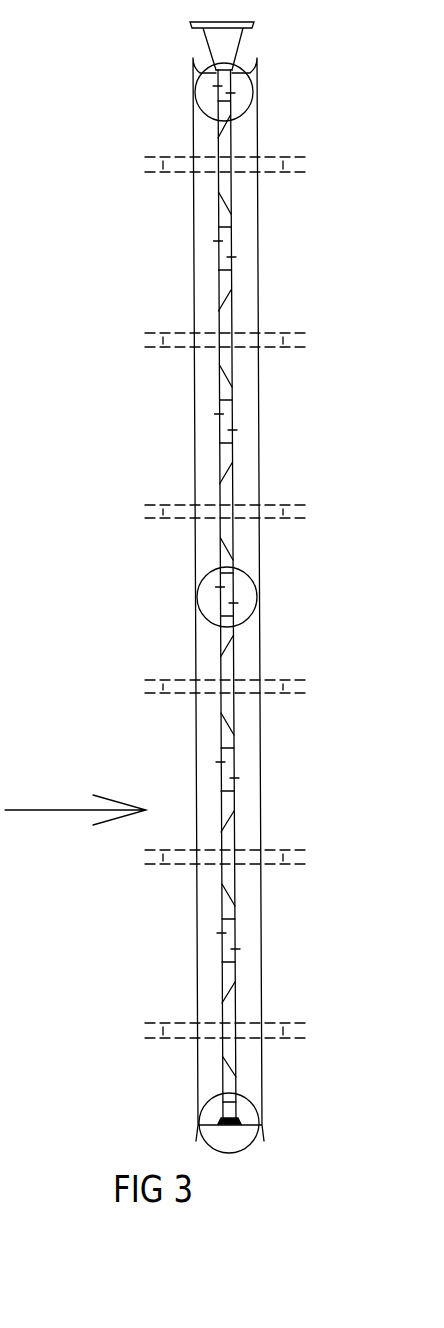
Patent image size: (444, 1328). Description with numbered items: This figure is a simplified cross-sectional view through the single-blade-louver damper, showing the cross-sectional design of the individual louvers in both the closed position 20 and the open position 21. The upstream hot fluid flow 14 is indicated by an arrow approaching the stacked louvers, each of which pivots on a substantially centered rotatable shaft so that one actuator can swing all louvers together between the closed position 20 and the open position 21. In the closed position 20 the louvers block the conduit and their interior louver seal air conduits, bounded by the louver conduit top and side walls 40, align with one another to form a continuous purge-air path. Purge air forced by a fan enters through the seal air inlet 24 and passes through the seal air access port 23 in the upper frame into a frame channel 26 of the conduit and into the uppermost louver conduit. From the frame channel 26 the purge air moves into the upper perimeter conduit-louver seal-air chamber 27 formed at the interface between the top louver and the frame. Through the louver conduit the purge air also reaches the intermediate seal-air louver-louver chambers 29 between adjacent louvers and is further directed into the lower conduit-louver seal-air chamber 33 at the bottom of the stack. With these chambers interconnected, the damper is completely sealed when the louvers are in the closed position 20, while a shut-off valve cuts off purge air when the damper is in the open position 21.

The fluid flow 14 is at (40, 808).
The closed position 20 is at (199, 253).
The open position 21 is at (167, 348).
The seal air access port 23 is at (224, 69).
The seal air inlet 24 is at (245, 43).
The frame channel 26 is at (231, 87).
The upper perimeter conduit-louver seal-air chamber 27 is at (243, 115).
The intermediate seal-air louver-louver chamber 29 is at (247, 615).
The lower conduit-louver seal-air chamber 33 is at (247, 1148).
The side walls 40 is at (232, 392).